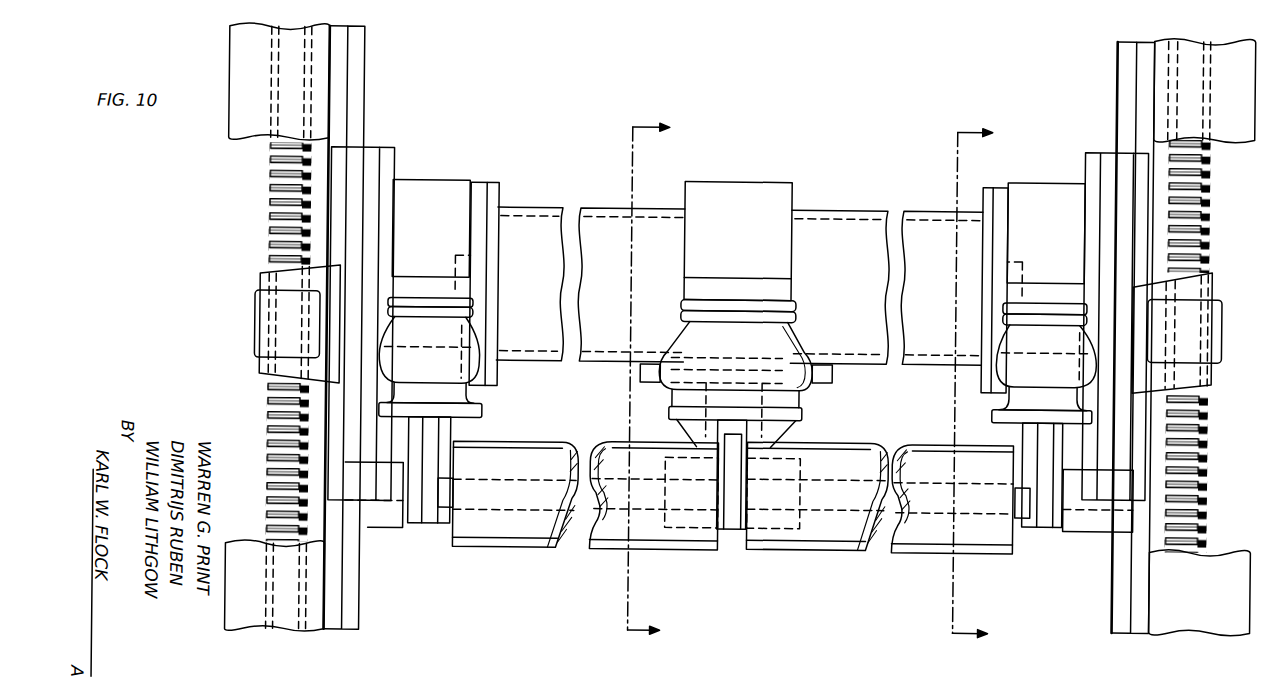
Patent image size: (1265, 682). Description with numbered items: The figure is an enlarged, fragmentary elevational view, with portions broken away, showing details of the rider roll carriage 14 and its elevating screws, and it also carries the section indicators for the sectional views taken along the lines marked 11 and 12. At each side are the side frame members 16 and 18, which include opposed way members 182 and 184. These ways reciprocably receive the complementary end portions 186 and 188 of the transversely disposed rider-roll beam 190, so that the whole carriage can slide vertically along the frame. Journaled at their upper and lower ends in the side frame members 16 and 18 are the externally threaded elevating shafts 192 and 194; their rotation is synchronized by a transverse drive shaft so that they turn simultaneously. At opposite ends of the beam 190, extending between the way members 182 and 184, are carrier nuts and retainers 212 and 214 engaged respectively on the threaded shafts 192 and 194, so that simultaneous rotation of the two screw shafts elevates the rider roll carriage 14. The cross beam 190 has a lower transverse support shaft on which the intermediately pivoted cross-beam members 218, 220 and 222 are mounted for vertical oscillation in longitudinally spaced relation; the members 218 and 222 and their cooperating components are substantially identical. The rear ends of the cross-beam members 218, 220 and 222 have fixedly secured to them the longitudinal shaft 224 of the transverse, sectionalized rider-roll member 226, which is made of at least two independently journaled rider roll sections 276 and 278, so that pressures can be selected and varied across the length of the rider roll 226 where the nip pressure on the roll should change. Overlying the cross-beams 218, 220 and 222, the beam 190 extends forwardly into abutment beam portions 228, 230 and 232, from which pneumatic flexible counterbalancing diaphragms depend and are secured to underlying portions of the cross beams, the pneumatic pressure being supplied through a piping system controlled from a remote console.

The section line 11- 11 is at (994, 388).
The section line 12- 12 is at (666, 384).
The rider roll carriage 14 is at (834, 206).
The side frame member 16 is at (256, 105).
The side frame member 18 is at (1238, 95).
The way member 182 is at (355, 52).
The way member 184 is at (1121, 74).
The end portion of rider-roll beam 186 is at (376, 152).
The end portion of rider-roll beam 188 is at (1105, 148).
The rider-roll beam 190 is at (602, 208).
The externally threaded elevating shaft 192 is at (271, 408).
The externally threaded elevating shaft 194 is at (1208, 471).
The carrier nut and retainer 212 is at (257, 326).
The carrier nut and retainer 214 is at (1213, 309).
The cross-beam member 218 is at (427, 443).
The cross-beam member 220 is at (735, 502).
The cross-beam member 222 is at (1043, 445).
The longitudinal shaft of rider-roll member 224 is at (1025, 516).
The rider-roll member 226 is at (805, 551).
The abutment beam portion 228 is at (450, 272).
The abutment beam portion 230 is at (777, 291).
The abutment beam portion 232 is at (1015, 285).
The rider roll section 276 is at (515, 535).
The rider roll section 278 is at (980, 551).